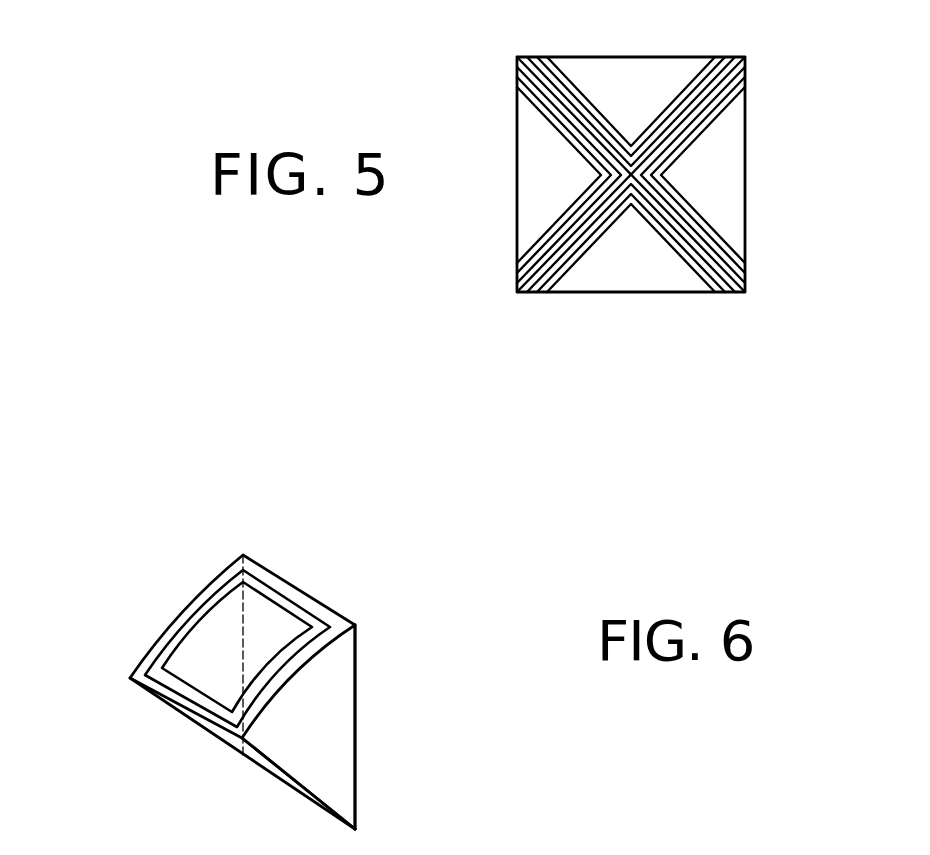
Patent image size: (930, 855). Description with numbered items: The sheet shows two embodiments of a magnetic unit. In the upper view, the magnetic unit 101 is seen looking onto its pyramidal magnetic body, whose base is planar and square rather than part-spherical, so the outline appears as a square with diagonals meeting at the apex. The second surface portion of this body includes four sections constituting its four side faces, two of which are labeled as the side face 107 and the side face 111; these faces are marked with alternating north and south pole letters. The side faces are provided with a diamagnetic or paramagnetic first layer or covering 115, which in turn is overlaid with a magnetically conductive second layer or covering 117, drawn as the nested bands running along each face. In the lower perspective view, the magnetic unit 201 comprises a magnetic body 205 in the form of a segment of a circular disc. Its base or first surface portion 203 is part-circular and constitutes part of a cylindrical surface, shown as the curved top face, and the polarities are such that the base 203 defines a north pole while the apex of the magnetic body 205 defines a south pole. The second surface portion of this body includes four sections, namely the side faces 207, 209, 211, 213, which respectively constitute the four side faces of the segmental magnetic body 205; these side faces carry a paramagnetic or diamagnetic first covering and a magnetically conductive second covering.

In FIG. 5, the magnetic unit 101 is at (655, 57).
In FIG. 5, the side face section 107 is at (705, 133).
In FIG. 5, the side face section 111 is at (708, 223).
In FIG. 5, the first layer or covering 115 is at (712, 268).
In FIG. 5, the second layer or covering 117 is at (693, 261).
In FIG. 6, the magnetic unit 201 is at (140, 715).
In FIG. 6, the base or first surface portion 203 is at (267, 625).
In FIG. 6, the magnetic body 205 is at (240, 693).
In FIG. 6, the side face section 207 is at (257, 763).
In FIG. 6, the side face section 209 is at (315, 737).
In FIG. 6, the side face section 211 is at (320, 688).
In FIG. 6, the side face section 213 is at (193, 655).